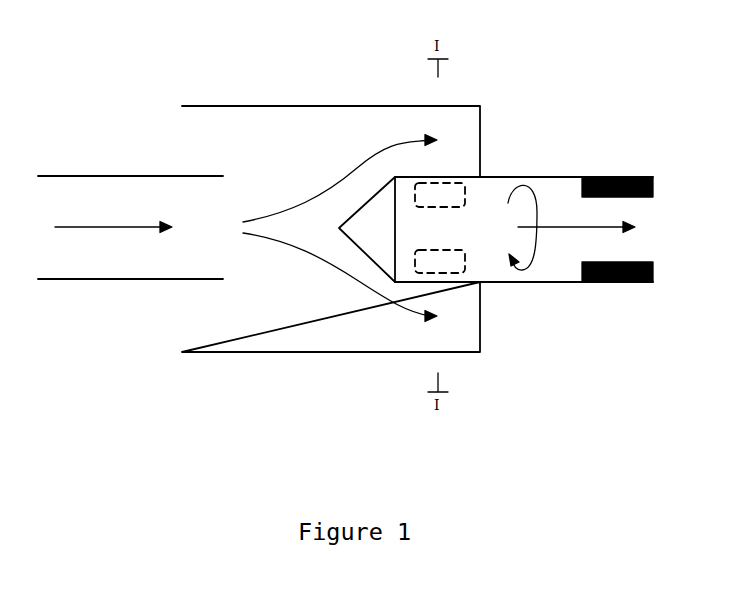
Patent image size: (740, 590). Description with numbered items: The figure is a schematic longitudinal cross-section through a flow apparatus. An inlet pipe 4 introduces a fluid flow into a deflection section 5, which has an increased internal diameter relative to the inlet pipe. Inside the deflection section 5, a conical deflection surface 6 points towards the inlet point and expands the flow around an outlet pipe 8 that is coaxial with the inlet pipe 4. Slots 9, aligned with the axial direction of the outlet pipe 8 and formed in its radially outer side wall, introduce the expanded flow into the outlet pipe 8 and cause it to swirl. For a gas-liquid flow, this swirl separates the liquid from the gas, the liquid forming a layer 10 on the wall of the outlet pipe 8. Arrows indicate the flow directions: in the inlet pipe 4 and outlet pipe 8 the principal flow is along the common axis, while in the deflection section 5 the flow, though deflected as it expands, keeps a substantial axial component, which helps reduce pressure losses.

The inlet pipe 4 is at (127, 176).
The deflection section 5 is at (303, 106).
The conical deflection surface 6 is at (377, 265).
The outlet pipe 8 is at (557, 282).
The slots 9 is at (453, 207).
The layer 10 is at (635, 177).